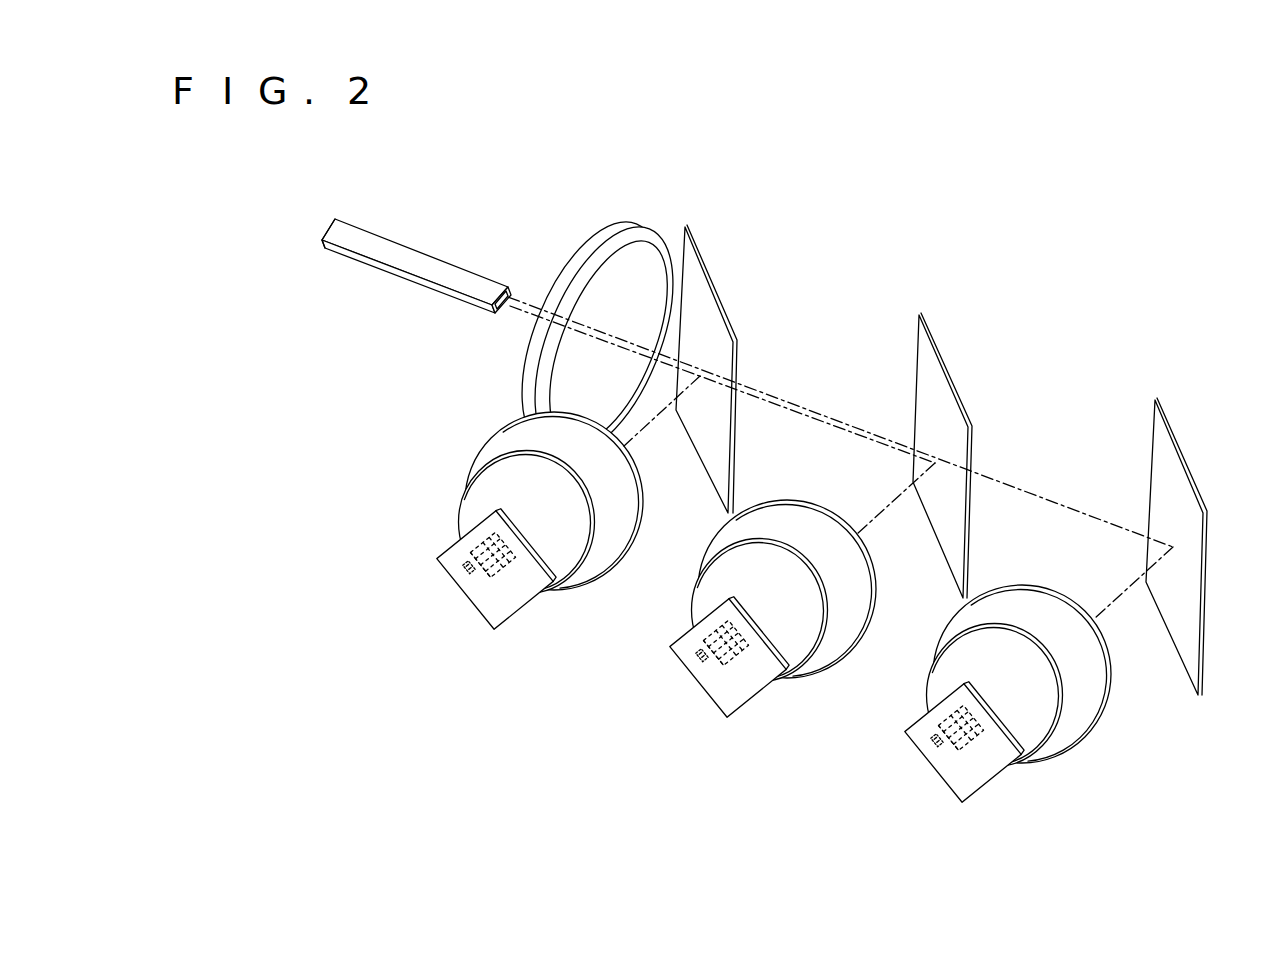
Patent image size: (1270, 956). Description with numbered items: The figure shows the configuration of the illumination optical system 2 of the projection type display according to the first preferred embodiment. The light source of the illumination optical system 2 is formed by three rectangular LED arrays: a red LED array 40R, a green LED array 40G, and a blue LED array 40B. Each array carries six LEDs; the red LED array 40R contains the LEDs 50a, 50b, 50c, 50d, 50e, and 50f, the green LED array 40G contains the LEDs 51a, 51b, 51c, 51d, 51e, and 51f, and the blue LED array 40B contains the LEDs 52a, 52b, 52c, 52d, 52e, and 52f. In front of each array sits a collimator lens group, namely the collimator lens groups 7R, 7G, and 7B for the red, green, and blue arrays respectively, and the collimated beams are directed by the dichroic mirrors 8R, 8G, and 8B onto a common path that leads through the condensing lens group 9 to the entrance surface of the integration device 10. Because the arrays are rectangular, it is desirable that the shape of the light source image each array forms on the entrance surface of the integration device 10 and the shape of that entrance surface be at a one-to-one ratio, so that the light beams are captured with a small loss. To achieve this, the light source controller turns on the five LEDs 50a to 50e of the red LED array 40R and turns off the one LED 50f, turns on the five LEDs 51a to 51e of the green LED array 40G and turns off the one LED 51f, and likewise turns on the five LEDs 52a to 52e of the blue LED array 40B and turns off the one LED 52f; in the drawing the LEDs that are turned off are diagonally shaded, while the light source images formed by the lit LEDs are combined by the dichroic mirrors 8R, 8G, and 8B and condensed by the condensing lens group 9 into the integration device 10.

The illumination optical system 2 is at (891, 292).
The integration device 10 is at (443, 262).
The condensing lens group 9 is at (596, 225).
The dichroic mirror 8R is at (705, 262).
The dichroic mirror 8G is at (938, 342).
The dichroic mirror 8B is at (1172, 433).
The collimator lens group 7R is at (603, 576).
The collimator lens group 7G is at (784, 606).
The collimator lens group 7B is at (1019, 690).
The red LED array 40R is at (520, 592).
The green LED array 40G is at (736, 686).
The blue LED array 40B is at (969, 770).
The LED 50a is at (473, 522).
The LED 50b is at (528, 536).
The LED 50c is at (520, 552).
The LED 50d is at (493, 592).
The LED 50e is at (465, 580).
The LED 50f is at (457, 560).
The LED 51a is at (685, 621).
The LED 51b is at (753, 620).
The LED 51c is at (770, 635).
The LED 51d is at (736, 693).
The LED 51e is at (711, 690).
The LED 51f is at (691, 667).
The LED 52a is at (919, 707).
The LED 52b is at (986, 703).
The LED 52c is at (1003, 720).
The LED 52d is at (971, 780).
The LED 52e is at (946, 773).
The LED 52f is at (925, 752).